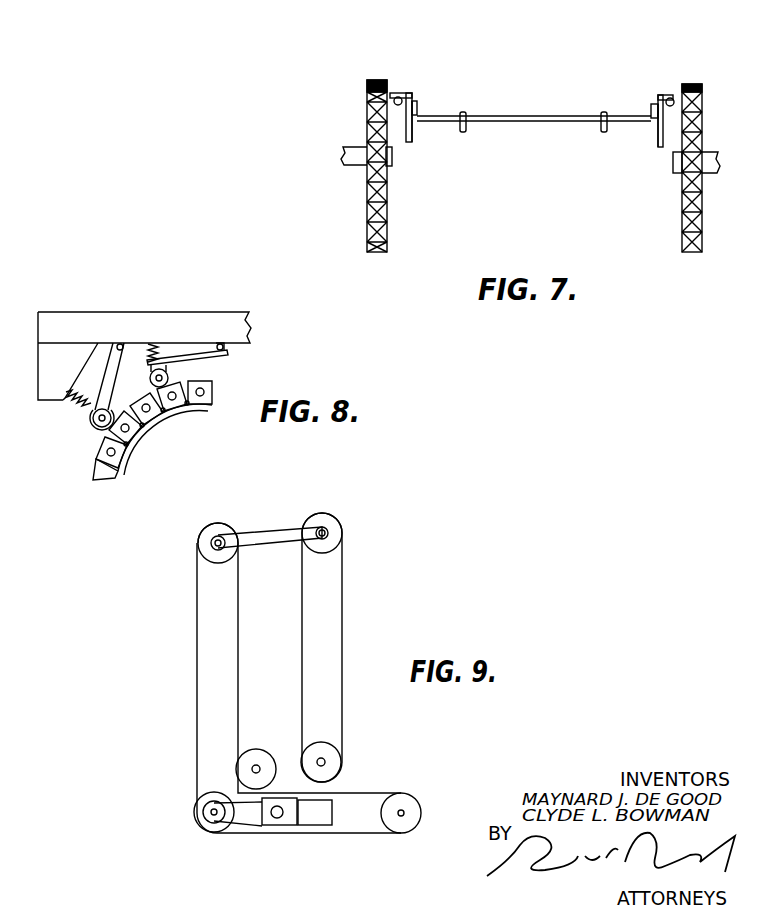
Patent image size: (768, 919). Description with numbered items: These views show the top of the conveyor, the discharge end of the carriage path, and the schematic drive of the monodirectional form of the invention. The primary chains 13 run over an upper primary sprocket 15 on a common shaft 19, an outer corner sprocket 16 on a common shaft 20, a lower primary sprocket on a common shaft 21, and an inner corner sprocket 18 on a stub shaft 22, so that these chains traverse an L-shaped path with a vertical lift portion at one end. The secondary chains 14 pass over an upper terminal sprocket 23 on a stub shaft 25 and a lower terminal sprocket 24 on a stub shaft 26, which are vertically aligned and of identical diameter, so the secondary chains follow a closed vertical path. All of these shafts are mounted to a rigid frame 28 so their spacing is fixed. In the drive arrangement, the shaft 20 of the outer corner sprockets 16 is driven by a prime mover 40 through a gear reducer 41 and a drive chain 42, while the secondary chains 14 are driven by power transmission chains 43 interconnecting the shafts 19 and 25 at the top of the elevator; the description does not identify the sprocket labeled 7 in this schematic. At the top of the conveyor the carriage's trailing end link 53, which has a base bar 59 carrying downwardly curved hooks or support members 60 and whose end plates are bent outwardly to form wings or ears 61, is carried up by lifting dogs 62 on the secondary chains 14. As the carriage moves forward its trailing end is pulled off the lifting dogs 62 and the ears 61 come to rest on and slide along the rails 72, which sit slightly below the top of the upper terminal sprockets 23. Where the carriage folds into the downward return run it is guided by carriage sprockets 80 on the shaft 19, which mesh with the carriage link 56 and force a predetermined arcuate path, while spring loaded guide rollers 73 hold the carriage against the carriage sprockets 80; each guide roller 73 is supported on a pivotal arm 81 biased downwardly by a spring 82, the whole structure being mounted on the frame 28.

In FIG. 9, the drive pulley 7 is at (408, 800).
In FIG. 9, the primary chains 13 is at (245, 650).
In FIG. 7, the secondary chains 14 is at (396, 230).
In FIG. 9, the secondary chains 14 is at (353, 609).
In FIG. 9, the upper primary sprocket 15 is at (207, 555).
In FIG. 9, the outer corner sprocket 16 is at (196, 808).
In FIG. 9, the inner corner sprocket 18 is at (250, 752).
In FIG. 9, the common shaft 19 is at (221, 540).
In FIG. 9, the common shaft 20 is at (211, 815).
In FIG. 9, the common shaft 21 is at (405, 813).
In FIG. 9, the stub shaft 22 is at (258, 766).
In FIG. 9, the upper terminal sprocket 23 is at (334, 538).
In FIG. 9, the lower terminal sprocket 24 is at (318, 745).
In FIG. 7, the stub shaft 25 is at (355, 150).
In FIG. 9, the stub shaft 25 is at (327, 530).
In FIG. 7, the stub shaft 26 is at (711, 154).
In FIG. 9, the stub shaft 26 is at (325, 760).
In FIG. 8, the frame 28 is at (168, 302).
In FIG. 9, the prime mover 40 is at (315, 815).
In FIG. 9, the gear reducer 41 is at (291, 822).
In FIG. 9, the drive chain 42 is at (245, 827).
In FIG. 9, the power transmission chains 43 is at (258, 548).
In FIG. 7, the end link 53 is at (424, 146).
In FIG. 8, the carriage link 56 is at (162, 430).
In FIG. 7, the base bar 59 is at (522, 116).
In FIG. 7, the support members 60 is at (466, 131).
In FIG. 7, the wings 61 is at (400, 96).
In FIG. 7, the lifting dogs 62 is at (393, 165).
In FIG. 7, the rails 72 is at (411, 95).
In FIG. 8, the guide rollers 73 is at (170, 379).
In FIG. 8, the carriage sprockets 80 is at (187, 414).
In FIG. 8, the pivotal arm 81 is at (113, 373).
In FIG. 8, the spring 82 is at (68, 398).